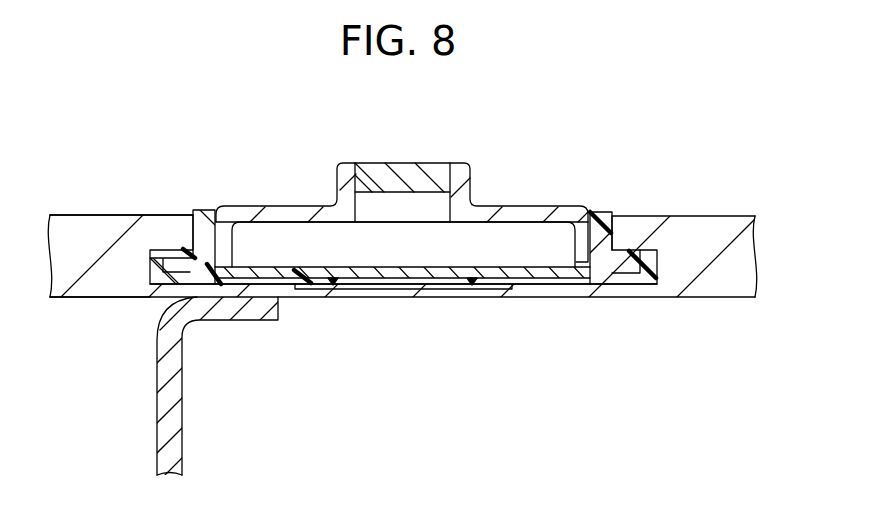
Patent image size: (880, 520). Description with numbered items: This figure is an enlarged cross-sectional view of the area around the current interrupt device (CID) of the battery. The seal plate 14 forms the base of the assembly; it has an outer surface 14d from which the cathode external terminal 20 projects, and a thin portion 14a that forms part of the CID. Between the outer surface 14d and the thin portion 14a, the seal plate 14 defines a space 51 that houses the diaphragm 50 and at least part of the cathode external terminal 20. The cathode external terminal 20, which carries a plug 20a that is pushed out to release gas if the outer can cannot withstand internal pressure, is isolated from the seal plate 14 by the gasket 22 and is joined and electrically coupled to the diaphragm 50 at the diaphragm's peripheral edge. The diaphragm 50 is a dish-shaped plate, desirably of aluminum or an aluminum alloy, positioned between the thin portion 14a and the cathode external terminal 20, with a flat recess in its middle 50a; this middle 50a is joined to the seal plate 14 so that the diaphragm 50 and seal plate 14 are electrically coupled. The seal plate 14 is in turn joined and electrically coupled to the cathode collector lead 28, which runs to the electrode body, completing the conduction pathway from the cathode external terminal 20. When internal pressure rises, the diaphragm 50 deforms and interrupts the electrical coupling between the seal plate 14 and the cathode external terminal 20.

The seal plate 14 is at (697, 230).
The outer surface 14d is at (108, 213).
The thin portion 14a is at (572, 288).
The cathode external terminal 20 is at (461, 168).
The plug 20a is at (390, 168).
The gasket 22 is at (603, 214).
The cathode collector lead 28 is at (167, 398).
The diaphragm 50 is at (265, 267).
The middle 50a is at (398, 279).
The space 51 is at (523, 252).